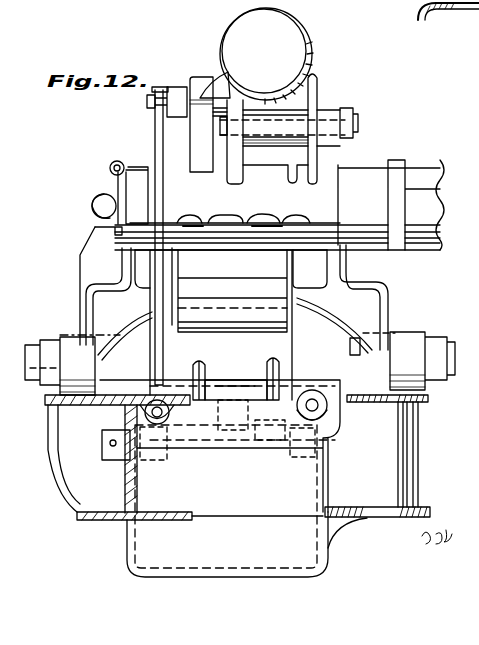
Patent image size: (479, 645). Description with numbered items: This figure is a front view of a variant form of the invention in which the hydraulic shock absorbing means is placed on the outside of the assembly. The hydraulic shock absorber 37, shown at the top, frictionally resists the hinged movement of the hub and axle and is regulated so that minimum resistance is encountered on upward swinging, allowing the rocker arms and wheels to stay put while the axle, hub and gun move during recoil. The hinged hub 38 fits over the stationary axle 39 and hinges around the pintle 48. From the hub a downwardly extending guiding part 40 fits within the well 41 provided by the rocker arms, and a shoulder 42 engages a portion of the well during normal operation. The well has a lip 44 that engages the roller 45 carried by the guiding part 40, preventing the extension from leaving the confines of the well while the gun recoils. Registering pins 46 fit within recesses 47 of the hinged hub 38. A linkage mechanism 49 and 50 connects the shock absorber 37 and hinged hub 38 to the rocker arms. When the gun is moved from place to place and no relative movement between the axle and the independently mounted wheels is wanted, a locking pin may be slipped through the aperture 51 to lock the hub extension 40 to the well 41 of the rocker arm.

The hydraulic shock absorber 37 is at (286, 50).
The hinged hub 38 is at (371, 177).
The stationary axle 39 is at (98, 203).
The guiding part 40 is at (294, 347).
The well 41 is at (300, 553).
The shoulder 42 is at (320, 296).
The lip 44 is at (226, 432).
The roller 45 is at (225, 440).
The registering pins 46 is at (203, 372).
The recesses 47 is at (221, 219).
The pintle 48 is at (70, 337).
The linkage mechanism 49 is at (154, 136).
The linkage mechanism 50 is at (174, 93).
The aperture 51 is at (248, 290).